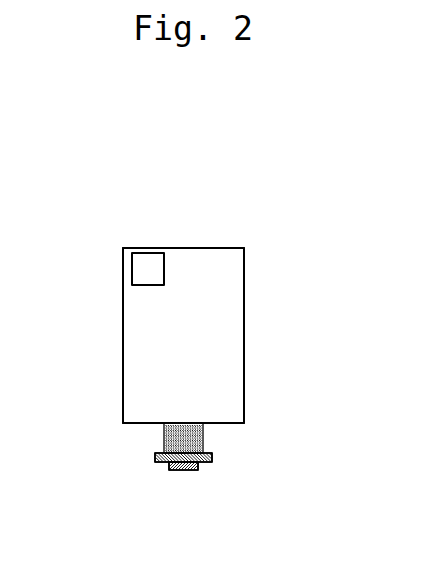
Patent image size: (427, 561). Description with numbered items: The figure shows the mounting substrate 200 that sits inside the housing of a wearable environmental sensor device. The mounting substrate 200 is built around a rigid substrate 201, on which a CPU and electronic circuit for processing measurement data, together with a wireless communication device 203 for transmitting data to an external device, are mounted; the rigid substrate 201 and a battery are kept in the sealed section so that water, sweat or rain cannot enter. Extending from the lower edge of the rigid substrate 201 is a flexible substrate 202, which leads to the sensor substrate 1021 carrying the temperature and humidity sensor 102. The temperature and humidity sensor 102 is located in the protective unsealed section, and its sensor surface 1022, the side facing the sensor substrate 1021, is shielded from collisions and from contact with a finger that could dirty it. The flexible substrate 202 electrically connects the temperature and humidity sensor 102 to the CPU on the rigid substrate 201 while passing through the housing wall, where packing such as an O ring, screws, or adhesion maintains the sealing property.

The mounting substrate 200 is at (207, 137).
The rigid substrate 201 is at (230, 300).
The flexible substrate 202 is at (163, 441).
The wireless communication device 203 is at (148, 257).
The temperature and humidity sensor 102 is at (170, 466).
The sensor substrate 1021 is at (155, 457).
The sensor surface 1022 is at (188, 470).